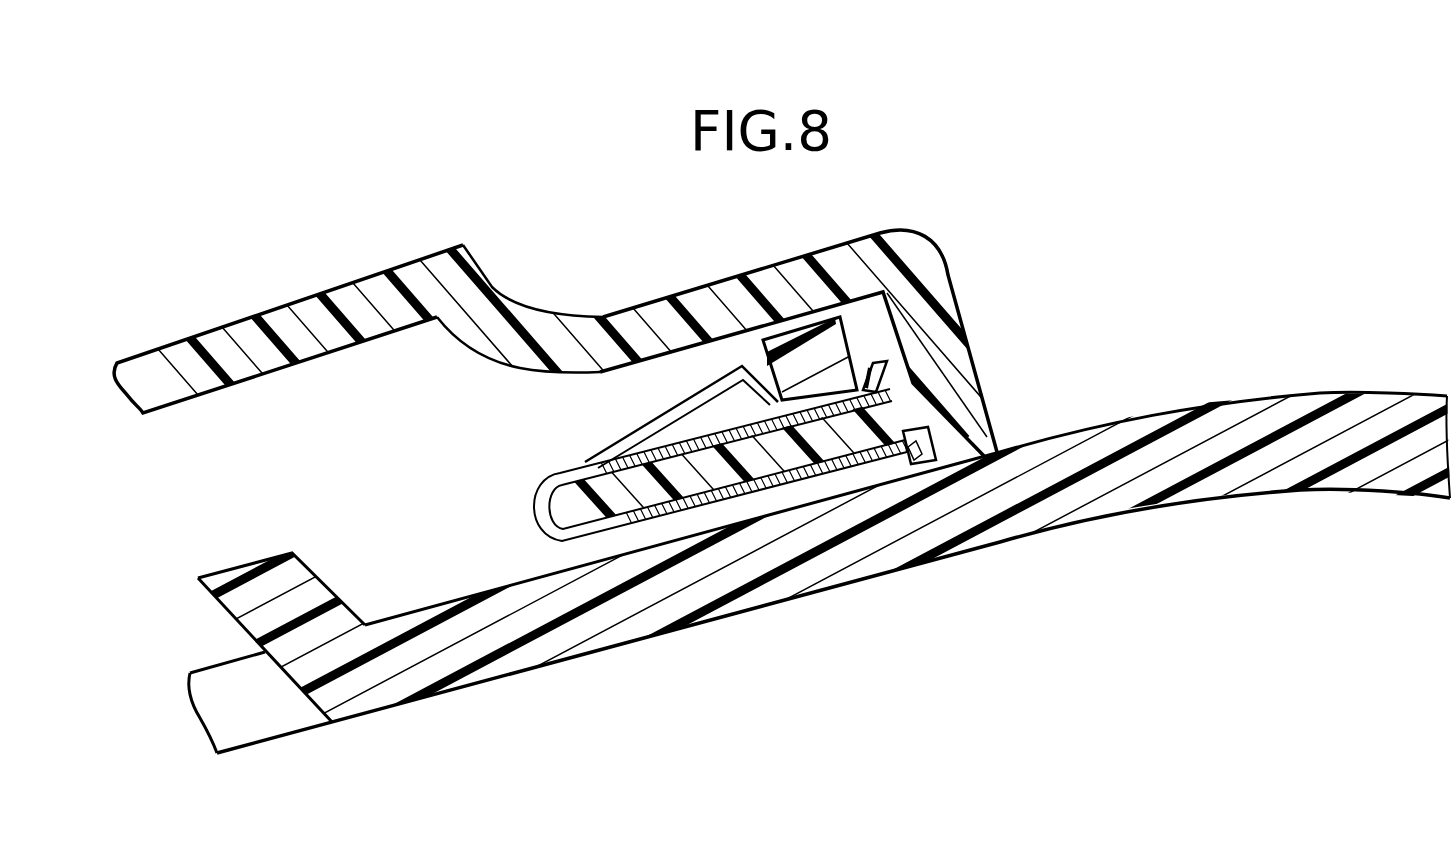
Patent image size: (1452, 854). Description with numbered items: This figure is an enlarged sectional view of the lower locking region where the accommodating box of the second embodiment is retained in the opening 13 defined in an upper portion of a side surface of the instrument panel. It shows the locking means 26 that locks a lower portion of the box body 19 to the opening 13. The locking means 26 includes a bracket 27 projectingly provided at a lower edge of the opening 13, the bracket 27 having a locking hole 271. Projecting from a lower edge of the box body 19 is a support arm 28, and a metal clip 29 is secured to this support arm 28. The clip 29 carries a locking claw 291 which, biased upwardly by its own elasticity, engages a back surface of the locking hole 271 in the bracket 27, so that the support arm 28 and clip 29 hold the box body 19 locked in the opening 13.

The opening 13 is at (1150, 418).
The box body 19 is at (515, 284).
The locking means 26 is at (977, 291).
The bracket 27 is at (856, 328).
The locking hole 271 is at (830, 493).
The support arm 28 is at (607, 490).
The metal clip 29 is at (538, 487).
The locking claw 291 is at (700, 390).